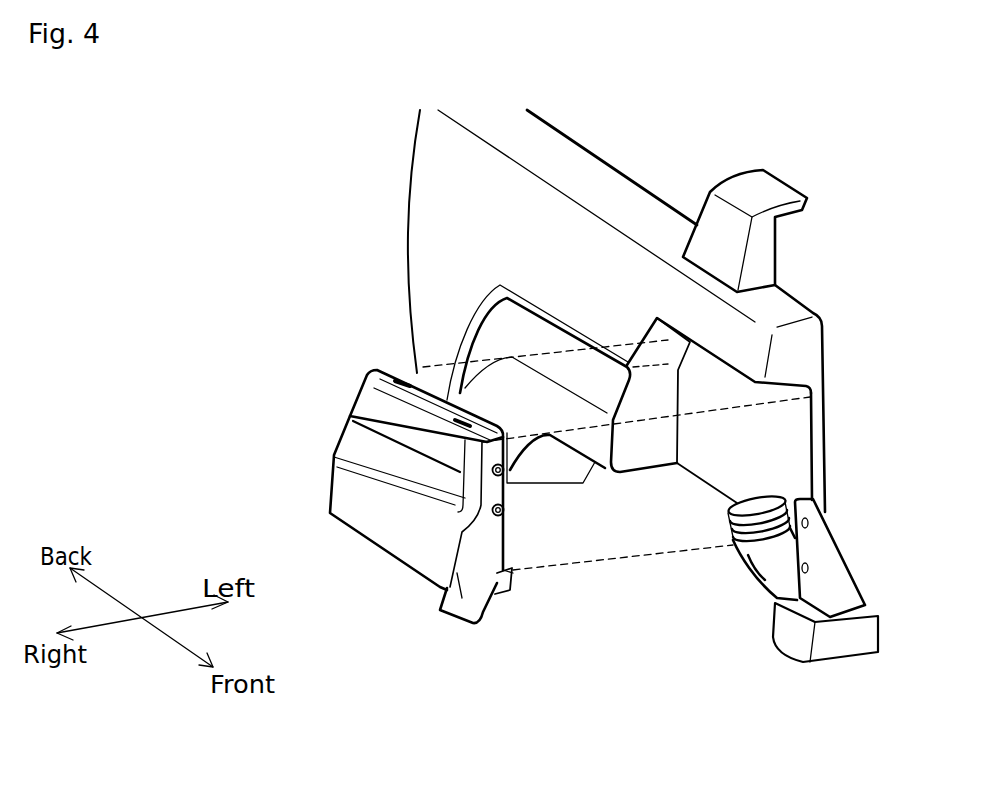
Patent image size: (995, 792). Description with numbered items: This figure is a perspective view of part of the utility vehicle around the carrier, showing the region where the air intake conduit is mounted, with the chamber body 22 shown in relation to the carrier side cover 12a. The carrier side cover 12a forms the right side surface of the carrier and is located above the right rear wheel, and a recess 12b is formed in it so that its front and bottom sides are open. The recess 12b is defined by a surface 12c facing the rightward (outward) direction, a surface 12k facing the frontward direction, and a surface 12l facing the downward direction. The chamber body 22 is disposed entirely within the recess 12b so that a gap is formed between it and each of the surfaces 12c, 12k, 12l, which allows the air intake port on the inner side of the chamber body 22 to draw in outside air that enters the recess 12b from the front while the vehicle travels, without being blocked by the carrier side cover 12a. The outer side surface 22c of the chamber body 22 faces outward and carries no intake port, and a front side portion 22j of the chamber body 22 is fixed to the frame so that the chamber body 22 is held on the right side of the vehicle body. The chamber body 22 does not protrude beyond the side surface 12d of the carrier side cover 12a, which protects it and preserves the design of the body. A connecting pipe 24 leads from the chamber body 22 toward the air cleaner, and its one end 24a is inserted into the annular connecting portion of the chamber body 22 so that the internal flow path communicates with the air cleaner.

The carrier side cover 12a is at (625, 200).
The recess 12b is at (667, 480).
The surface facing rightward direction 12c is at (738, 443).
The side surface of carrier side cover 12d is at (512, 224).
The surface facing frontward direction 12k is at (668, 385).
The surface facing downward direction 12l is at (787, 380).
The chamber body 22 is at (363, 408).
The outer side surface 22c is at (393, 537).
The front side portion 22j is at (505, 490).
The connecting pipe 24 is at (775, 567).
The one end of connecting pipe 24a is at (732, 535).